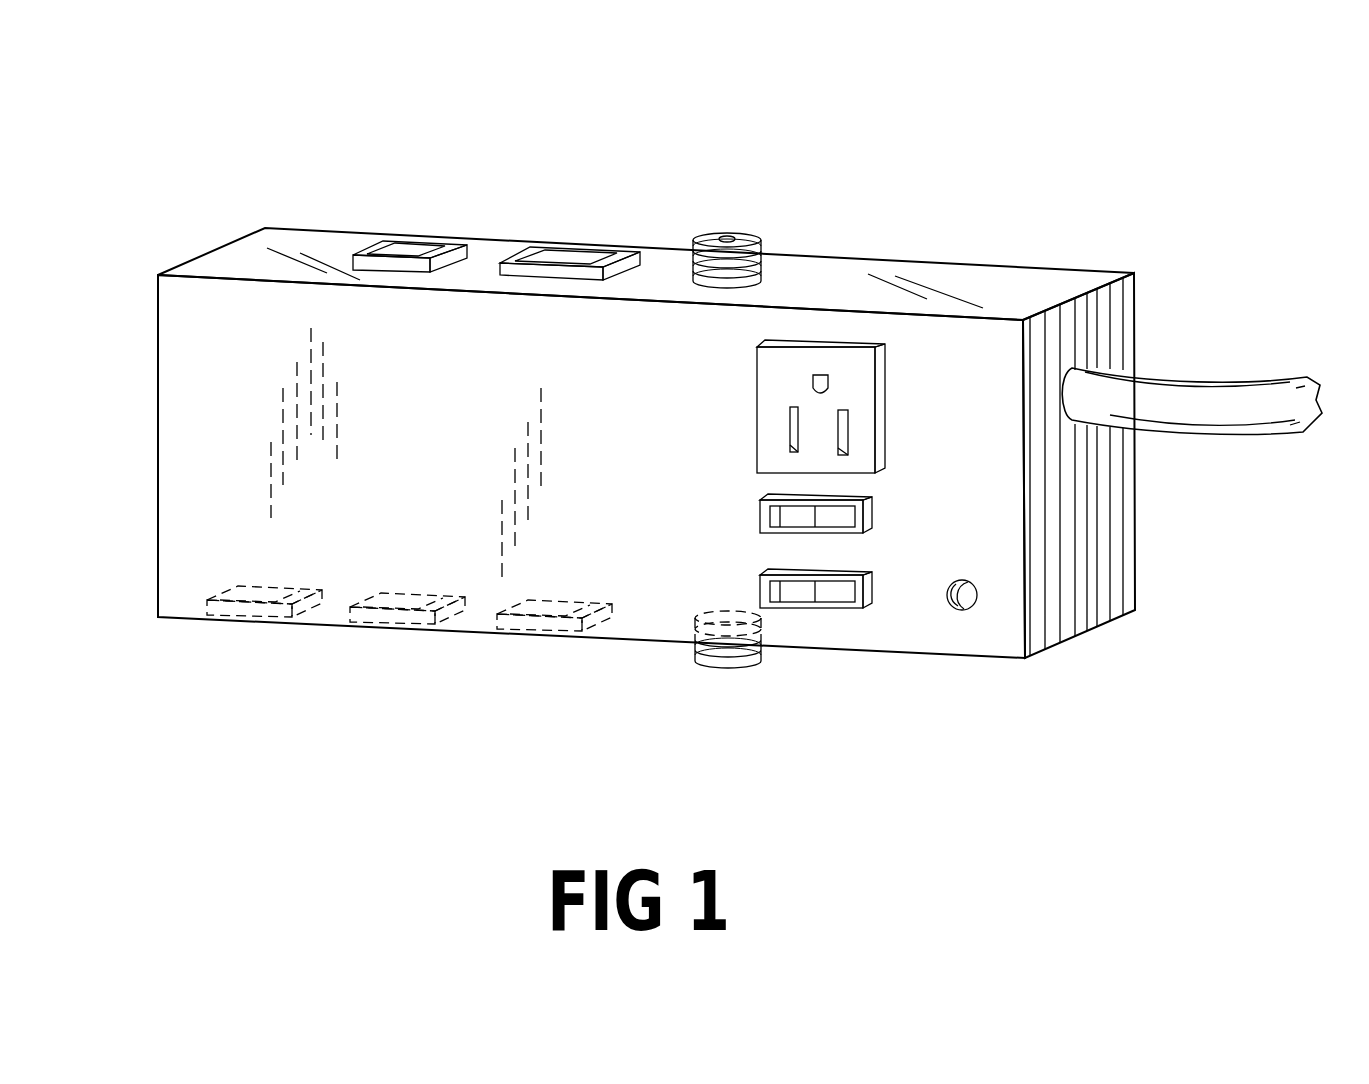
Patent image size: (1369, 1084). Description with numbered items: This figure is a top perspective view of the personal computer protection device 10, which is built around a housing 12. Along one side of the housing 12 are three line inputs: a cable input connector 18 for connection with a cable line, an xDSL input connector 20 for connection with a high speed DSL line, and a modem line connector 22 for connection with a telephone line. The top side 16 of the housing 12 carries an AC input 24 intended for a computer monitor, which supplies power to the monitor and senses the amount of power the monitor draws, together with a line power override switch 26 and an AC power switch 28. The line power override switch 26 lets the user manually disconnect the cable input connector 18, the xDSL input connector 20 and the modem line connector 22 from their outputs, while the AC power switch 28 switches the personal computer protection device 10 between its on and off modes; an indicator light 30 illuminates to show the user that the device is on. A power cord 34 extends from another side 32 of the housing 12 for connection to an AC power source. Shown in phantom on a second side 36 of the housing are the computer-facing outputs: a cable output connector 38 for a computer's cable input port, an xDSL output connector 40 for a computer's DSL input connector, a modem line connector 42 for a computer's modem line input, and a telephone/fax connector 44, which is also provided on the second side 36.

The personal computer protection device 10 is at (1152, 238).
The housing 12 is at (243, 260).
The top side 16 is at (192, 428).
The cable input connector 18 is at (750, 232).
The xDSL input connector 20 is at (590, 247).
The modem line connector 22 is at (408, 238).
The AC input 24 is at (880, 436).
The line power override switch 26 is at (866, 502).
The AC power switch 28 is at (866, 576).
The indicator light 30 is at (975, 585).
The another side 32 is at (1085, 612).
The power cord 34 is at (1158, 395).
The second side 36 is at (870, 652).
The cable output connector 38 is at (722, 668).
The xDSL output connector 40 is at (548, 635).
The modem line connector 42 is at (385, 625).
The telephone/fax connector 44 is at (222, 625).